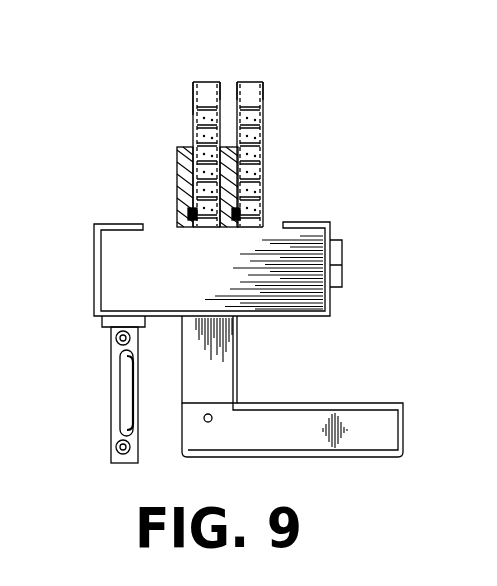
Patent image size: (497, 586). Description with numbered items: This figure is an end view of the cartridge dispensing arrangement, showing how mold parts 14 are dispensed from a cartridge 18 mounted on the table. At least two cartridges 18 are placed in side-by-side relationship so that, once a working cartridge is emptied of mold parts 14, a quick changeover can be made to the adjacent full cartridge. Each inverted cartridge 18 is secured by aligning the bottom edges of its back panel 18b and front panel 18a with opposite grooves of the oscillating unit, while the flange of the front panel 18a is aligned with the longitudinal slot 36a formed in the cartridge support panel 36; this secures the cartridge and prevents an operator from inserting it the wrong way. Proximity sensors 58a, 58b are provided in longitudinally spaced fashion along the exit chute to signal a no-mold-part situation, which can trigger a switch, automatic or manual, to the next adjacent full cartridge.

The mold parts 14 is at (185, 138).
The cartridge 18 is at (197, 97).
The front panel 18a is at (200, 98).
The back panel 18b is at (222, 86).
The cartridge support panel 36 is at (183, 178).
The longitudinal slot 36a is at (186, 211).
The proximity sensor 58a is at (112, 346).
The proximity sensor 58b is at (115, 441).